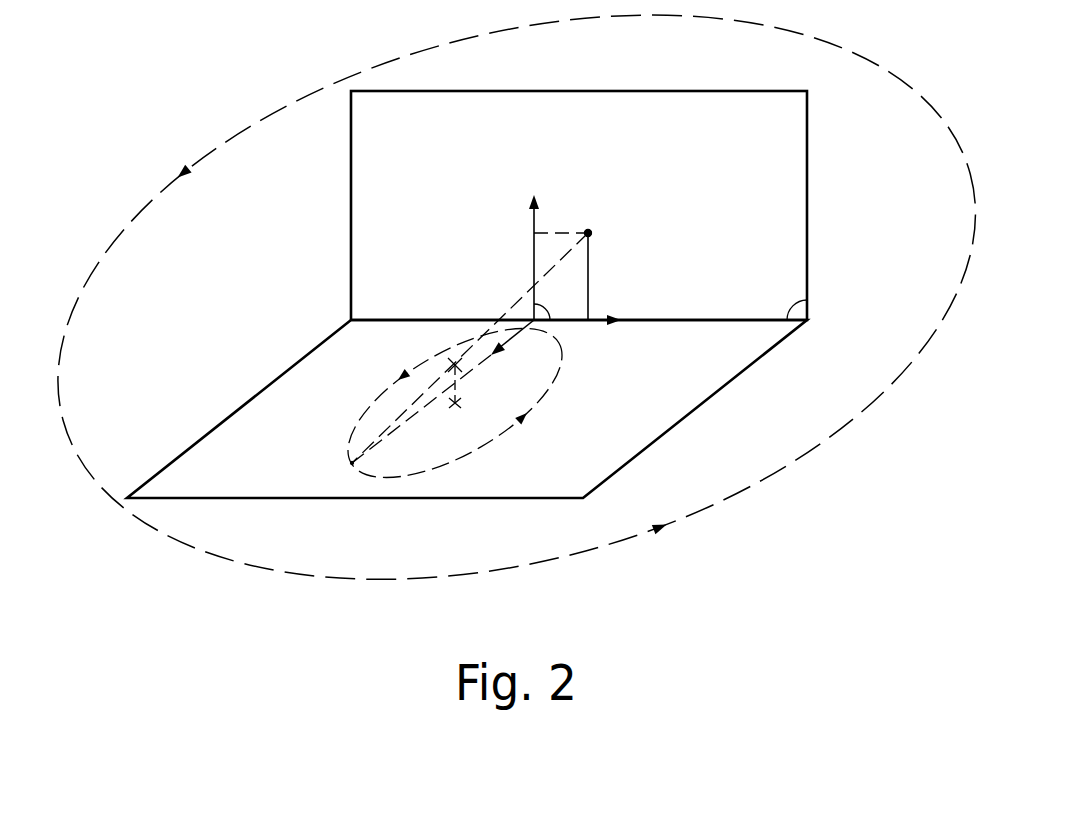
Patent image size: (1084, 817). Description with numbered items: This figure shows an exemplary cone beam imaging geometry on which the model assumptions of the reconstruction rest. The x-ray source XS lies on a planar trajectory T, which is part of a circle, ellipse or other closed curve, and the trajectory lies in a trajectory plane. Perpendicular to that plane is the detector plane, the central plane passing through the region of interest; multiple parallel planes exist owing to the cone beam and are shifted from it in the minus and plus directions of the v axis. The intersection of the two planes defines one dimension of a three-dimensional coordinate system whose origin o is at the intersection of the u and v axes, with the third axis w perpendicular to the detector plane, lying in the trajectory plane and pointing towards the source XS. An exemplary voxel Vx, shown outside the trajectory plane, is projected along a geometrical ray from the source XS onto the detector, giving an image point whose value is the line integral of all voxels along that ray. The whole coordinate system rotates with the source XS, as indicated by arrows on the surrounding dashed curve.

The trajectory T is at (540, 401).
The x-ray source XS is at (352, 466).
The voxel point Vx is at (455, 362).
The u coordinate axis u is at (585, 305).
The v coordinate axis v is at (524, 257).
The w coordinate axis w is at (511, 337).
The origin o is at (542, 310).